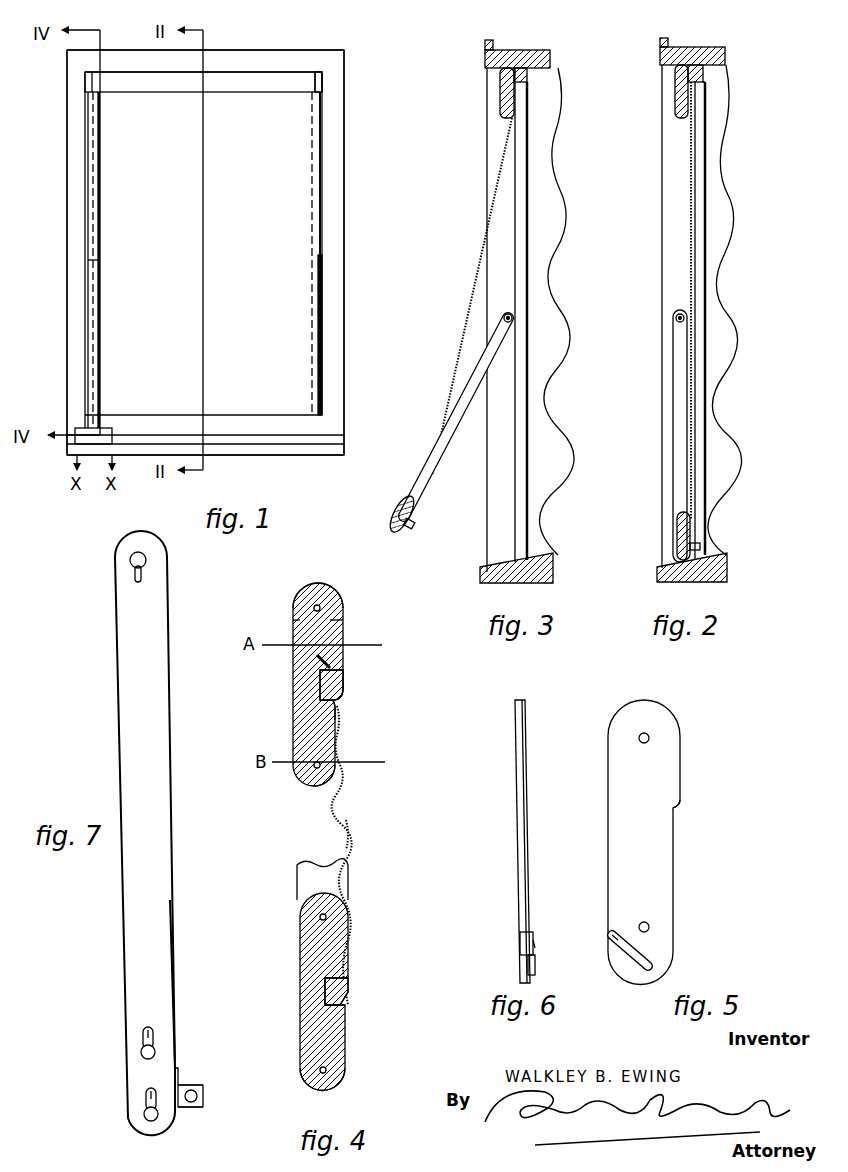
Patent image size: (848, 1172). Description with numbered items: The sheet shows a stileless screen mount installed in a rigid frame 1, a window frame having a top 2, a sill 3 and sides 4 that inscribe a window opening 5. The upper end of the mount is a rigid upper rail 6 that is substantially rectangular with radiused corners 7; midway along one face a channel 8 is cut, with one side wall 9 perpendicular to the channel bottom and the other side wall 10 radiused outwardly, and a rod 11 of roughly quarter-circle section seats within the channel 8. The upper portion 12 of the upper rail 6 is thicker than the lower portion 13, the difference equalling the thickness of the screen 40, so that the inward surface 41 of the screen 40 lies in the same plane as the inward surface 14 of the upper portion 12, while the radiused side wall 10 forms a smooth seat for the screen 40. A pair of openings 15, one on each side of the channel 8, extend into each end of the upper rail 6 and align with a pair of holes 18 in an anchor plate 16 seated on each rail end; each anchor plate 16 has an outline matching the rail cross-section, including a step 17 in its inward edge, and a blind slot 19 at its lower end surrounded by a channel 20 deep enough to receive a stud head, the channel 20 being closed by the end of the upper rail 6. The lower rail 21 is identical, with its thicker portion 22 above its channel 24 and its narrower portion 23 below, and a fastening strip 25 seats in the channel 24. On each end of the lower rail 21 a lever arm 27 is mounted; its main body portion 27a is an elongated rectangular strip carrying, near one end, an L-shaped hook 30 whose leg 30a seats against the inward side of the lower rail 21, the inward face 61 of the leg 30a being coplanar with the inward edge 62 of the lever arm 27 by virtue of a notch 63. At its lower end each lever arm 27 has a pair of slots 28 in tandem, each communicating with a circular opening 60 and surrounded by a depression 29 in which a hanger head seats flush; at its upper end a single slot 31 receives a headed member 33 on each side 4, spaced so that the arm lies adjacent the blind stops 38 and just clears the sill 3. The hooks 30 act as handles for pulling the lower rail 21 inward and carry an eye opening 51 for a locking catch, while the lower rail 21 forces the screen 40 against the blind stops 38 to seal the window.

In FIG. 1, the rigid frame 1 is at (352, 155).
In FIG. 1, the top 2 is at (265, 60).
In FIG. 3, the top 2 is at (552, 58).
In FIG. 2, the top 2 is at (660, 50).
In FIG. 1, the sill 3 is at (298, 450).
In FIG. 3, the sill 3 is at (553, 572).
In FIG. 2, the sill 3 is at (718, 569).
In FIG. 1, the sides 4 is at (75, 205).
In FIG. 3, the sides 4 is at (548, 445).
In FIG. 2, the sides 4 is at (720, 268).
In FIG. 3, the window opening 5 is at (565, 185).
In FIG. 2, the window opening 5 is at (740, 178).
In FIG. 1, the upper rail 6 is at (155, 80).
In FIG. 3, the upper rail 6 is at (500, 84).
In FIG. 2, the upper rail 6 is at (675, 99).
In FIG. 4, the upper rail 6 is at (300, 621).
In FIG. 4, the radiused corners 7 is at (325, 582).
In FIG. 4, the channel 8 is at (336, 697).
In FIG. 4, the side wall 9 is at (317, 655).
In FIG. 4, the side wall 10 is at (341, 706).
In FIG. 4, the rod 11 is at (343, 678).
In FIG. 4, the upper portion 12 is at (330, 621).
In FIG. 4, the lower portion 13 is at (340, 775).
In FIG. 4, the inward surface 14 is at (346, 608).
In FIG. 4, the openings 15 is at (315, 607).
In FIG. 1, the anchor plate 16 is at (322, 78).
In FIG. 5, the anchor plate 16 is at (615, 812).
In FIG. 6, the anchor plate 16 is at (517, 753).
In FIG. 5, the step 17 is at (678, 805).
In FIG. 5, the holes 18 is at (650, 738).
In FIG. 5, the blind slot 19 is at (615, 940).
In FIG. 6, the blind slot 19 is at (533, 945).
In FIG. 5, the channel 20 is at (655, 955).
In FIG. 6, the channel 20 is at (522, 941).
In FIG. 1, the lower rail 21 is at (233, 430).
In FIG. 3, the lower rail 21 is at (403, 497).
In FIG. 2, the lower rail 21 is at (678, 548).
In FIG. 4, the lower rail 21 is at (300, 946).
In FIG. 4, the thicker portion 22 is at (320, 916).
In FIG. 4, the narrower portion 23 is at (340, 1041).
In FIG. 4, the channel 24 is at (342, 1006).
In FIG. 4, the fastening strip 25 is at (350, 989).
In FIG. 1, the lever arm 27 is at (322, 278).
In FIG. 3, the lever arm 27 is at (445, 436).
In FIG. 2, the lever arm 27 is at (680, 406).
In FIG. 4, the lever arm 27 is at (320, 872).
In FIG. 7, the lever arm 27 is at (170, 611).
In FIG. 7, the main body portion 27a is at (130, 779).
In FIG. 7, the slots 28 is at (143, 1040).
In FIG. 7, the depression 29 is at (143, 1030).
In FIG. 7, the L-shaped hook 30 is at (205, 1089).
In FIG. 7, the leg 30a is at (185, 1108).
In FIG. 7, the slot 31 is at (133, 567).
In FIG. 3, the headed member 33 is at (512, 322).
In FIG. 2, the headed member 33 is at (678, 318).
In FIG. 1, the blind stops 38 is at (97, 212).
In FIG. 3, the blind stops 38 is at (527, 76).
In FIG. 2, the blind stops 38 is at (703, 72).
In FIG. 1, the screen 40 is at (312, 128).
In FIG. 3, the screen 40 is at (458, 336).
In FIG. 2, the screen 40 is at (690, 242).
In FIG. 4, the screen 40 is at (352, 842).
In FIG. 4, the inward surface 41 is at (350, 829).
In FIG. 7, the eye opening 51 is at (205, 1097).
In FIG. 7, the circular opening 60 is at (141, 1052).
In FIG. 7, the inward face 61 is at (186, 1084).
In FIG. 7, the inward edge 62 is at (178, 1012).
In FIG. 7, the notch 63 is at (178, 1068).